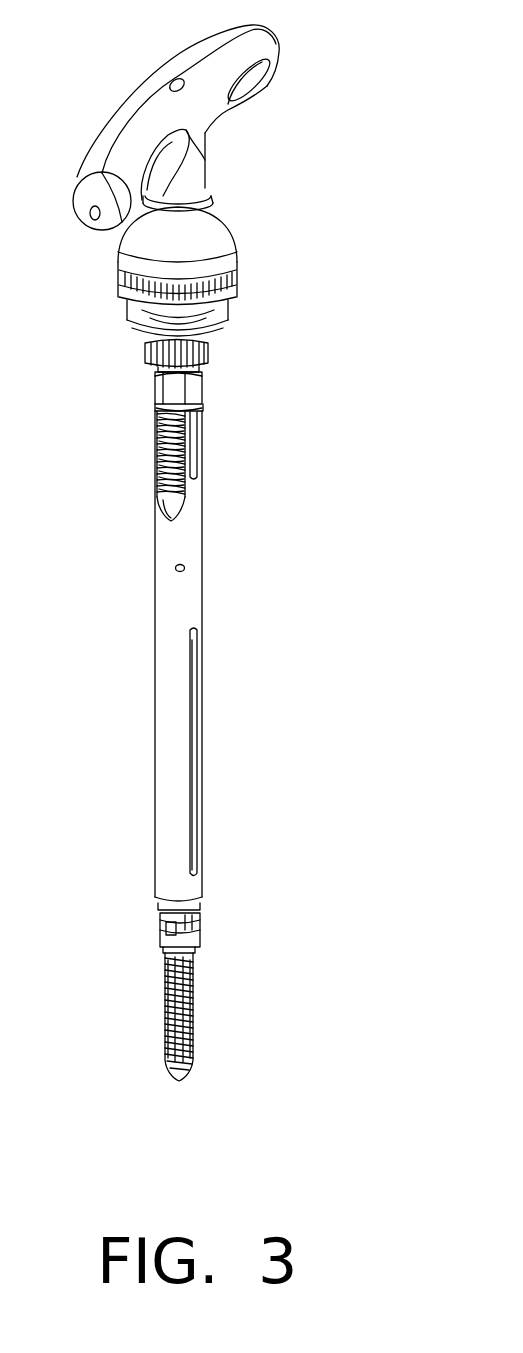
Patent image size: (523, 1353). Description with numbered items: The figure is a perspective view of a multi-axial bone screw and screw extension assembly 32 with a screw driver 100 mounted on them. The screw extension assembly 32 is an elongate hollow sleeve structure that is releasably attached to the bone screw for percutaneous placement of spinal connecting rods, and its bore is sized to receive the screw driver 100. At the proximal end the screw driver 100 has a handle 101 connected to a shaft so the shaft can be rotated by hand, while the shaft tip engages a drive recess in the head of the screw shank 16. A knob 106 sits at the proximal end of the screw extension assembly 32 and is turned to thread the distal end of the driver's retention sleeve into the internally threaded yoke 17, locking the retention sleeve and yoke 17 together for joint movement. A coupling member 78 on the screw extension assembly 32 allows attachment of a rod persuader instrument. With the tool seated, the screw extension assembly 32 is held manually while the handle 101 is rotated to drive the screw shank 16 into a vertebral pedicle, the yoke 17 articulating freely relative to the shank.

The screw driver 100 is at (225, 221).
The handle 101 is at (202, 117).
The knob 106 is at (213, 347).
The coupling member 78 is at (157, 453).
The screw extension assembly 32 is at (173, 727).
The yoke 17 is at (170, 923).
The screw shank 16 is at (192, 997).